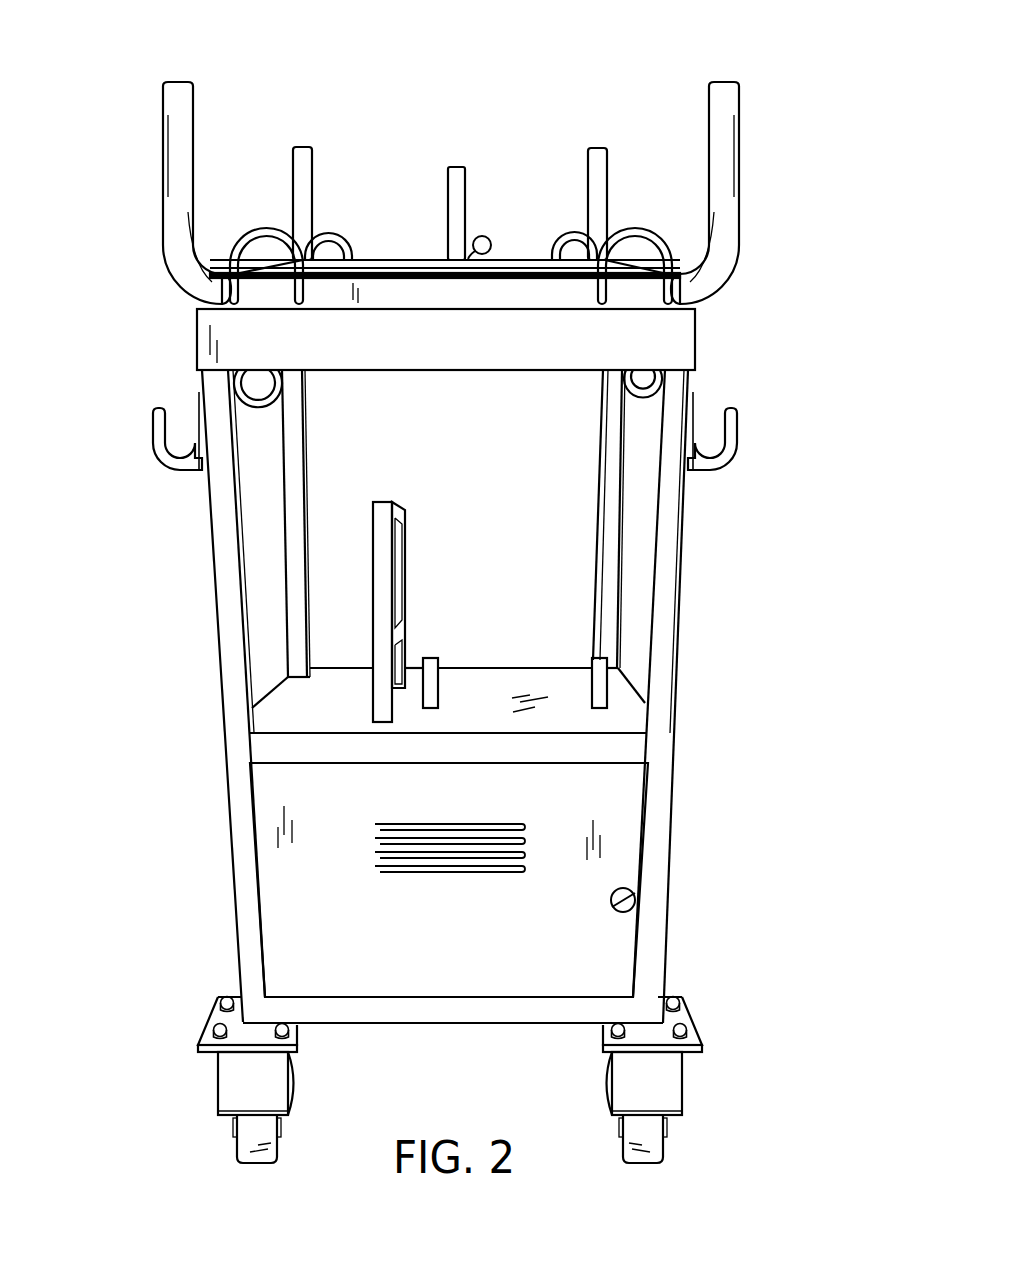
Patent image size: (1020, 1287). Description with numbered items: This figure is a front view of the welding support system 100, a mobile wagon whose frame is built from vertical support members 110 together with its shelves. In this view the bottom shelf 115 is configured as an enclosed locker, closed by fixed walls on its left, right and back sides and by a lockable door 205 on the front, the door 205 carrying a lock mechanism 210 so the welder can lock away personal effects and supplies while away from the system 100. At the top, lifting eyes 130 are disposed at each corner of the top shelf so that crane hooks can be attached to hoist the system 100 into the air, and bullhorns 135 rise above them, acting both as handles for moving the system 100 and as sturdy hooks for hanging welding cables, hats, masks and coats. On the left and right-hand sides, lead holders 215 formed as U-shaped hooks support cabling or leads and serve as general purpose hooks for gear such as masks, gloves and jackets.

The welding support system 100 is at (803, 114).
The vertical support members 110 is at (305, 467).
The bottom shelf 115 is at (335, 1010).
The lifting eyes 130 is at (255, 225).
The bullhorns 135 is at (163, 147).
The lockable door 205 is at (558, 804).
The lock mechanism 210 is at (632, 891).
The lead holders 215 is at (152, 435).